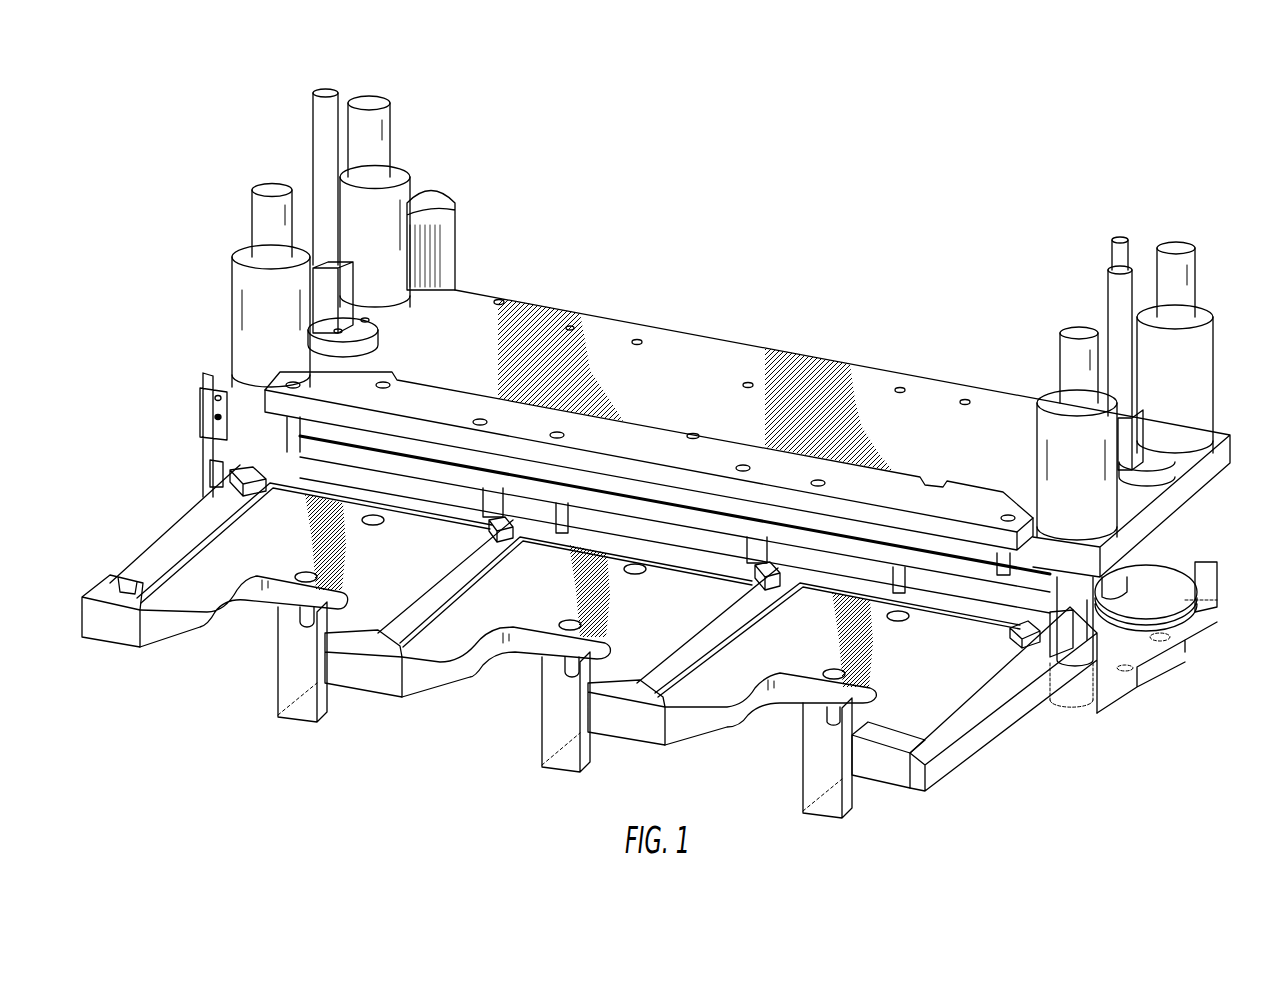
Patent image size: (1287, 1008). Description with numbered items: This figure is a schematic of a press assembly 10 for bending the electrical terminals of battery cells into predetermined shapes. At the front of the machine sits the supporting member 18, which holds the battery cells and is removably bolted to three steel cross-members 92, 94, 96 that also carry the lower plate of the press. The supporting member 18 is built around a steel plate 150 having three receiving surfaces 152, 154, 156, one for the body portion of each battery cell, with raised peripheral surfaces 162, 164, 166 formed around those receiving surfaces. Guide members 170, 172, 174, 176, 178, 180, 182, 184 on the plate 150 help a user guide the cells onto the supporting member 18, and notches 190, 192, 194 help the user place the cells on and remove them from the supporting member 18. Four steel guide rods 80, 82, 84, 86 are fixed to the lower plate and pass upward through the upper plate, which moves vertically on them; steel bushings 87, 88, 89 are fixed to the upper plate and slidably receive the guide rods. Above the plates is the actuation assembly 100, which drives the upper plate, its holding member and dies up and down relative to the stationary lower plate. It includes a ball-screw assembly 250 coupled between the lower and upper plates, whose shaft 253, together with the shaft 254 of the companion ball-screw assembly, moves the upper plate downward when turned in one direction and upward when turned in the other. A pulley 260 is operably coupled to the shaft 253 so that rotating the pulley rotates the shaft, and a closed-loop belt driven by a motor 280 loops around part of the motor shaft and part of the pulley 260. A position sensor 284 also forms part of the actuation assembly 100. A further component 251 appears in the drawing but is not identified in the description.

The press assembly 10 is at (719, 230).
The supporting member 18 is at (915, 795).
The guide rod 80 is at (272, 185).
The guide rod 82 is at (370, 102).
The guide rod 84 is at (1079, 332).
The guide rod 86 is at (1178, 248).
The bushing 87 is at (245, 310).
The bushing 88 is at (393, 183).
The bushing 89 is at (1040, 400).
The cross-member 92 is at (300, 708).
The cross-member 94 is at (557, 755).
The cross-member 96 is at (827, 808).
The actuation assembly 100 is at (516, 228).
The plate 150 is at (188, 633).
The receiving surface 152 is at (273, 567).
The receiving surface 154 is at (477, 630).
The receiving surface 156 is at (718, 690).
The raised peripheral surface 162 is at (400, 503).
The raised peripheral surface 164 is at (563, 537).
The raised peripheral surface 166 is at (827, 583).
The guide member 170 is at (103, 595).
The guide member 172 is at (233, 475).
The guide member 174 is at (378, 643).
The guide member 176 is at (507, 528).
The guide member 178 is at (648, 690).
The guide member 180 is at (770, 573).
The guide member 182 is at (1012, 633).
The guide member 184 is at (903, 743).
The notch 190 is at (308, 630).
The notch 192 is at (585, 667).
The notch 194 is at (865, 720).
The ball-screw assembly 250 is at (372, 336).
The top plate 251 is at (1170, 475).
The shaft 253 is at (327, 92).
The shaft 254 is at (1118, 240).
The pulley 260 is at (243, 440).
The motor 280 is at (452, 256).
The position sensor 284 is at (222, 457).